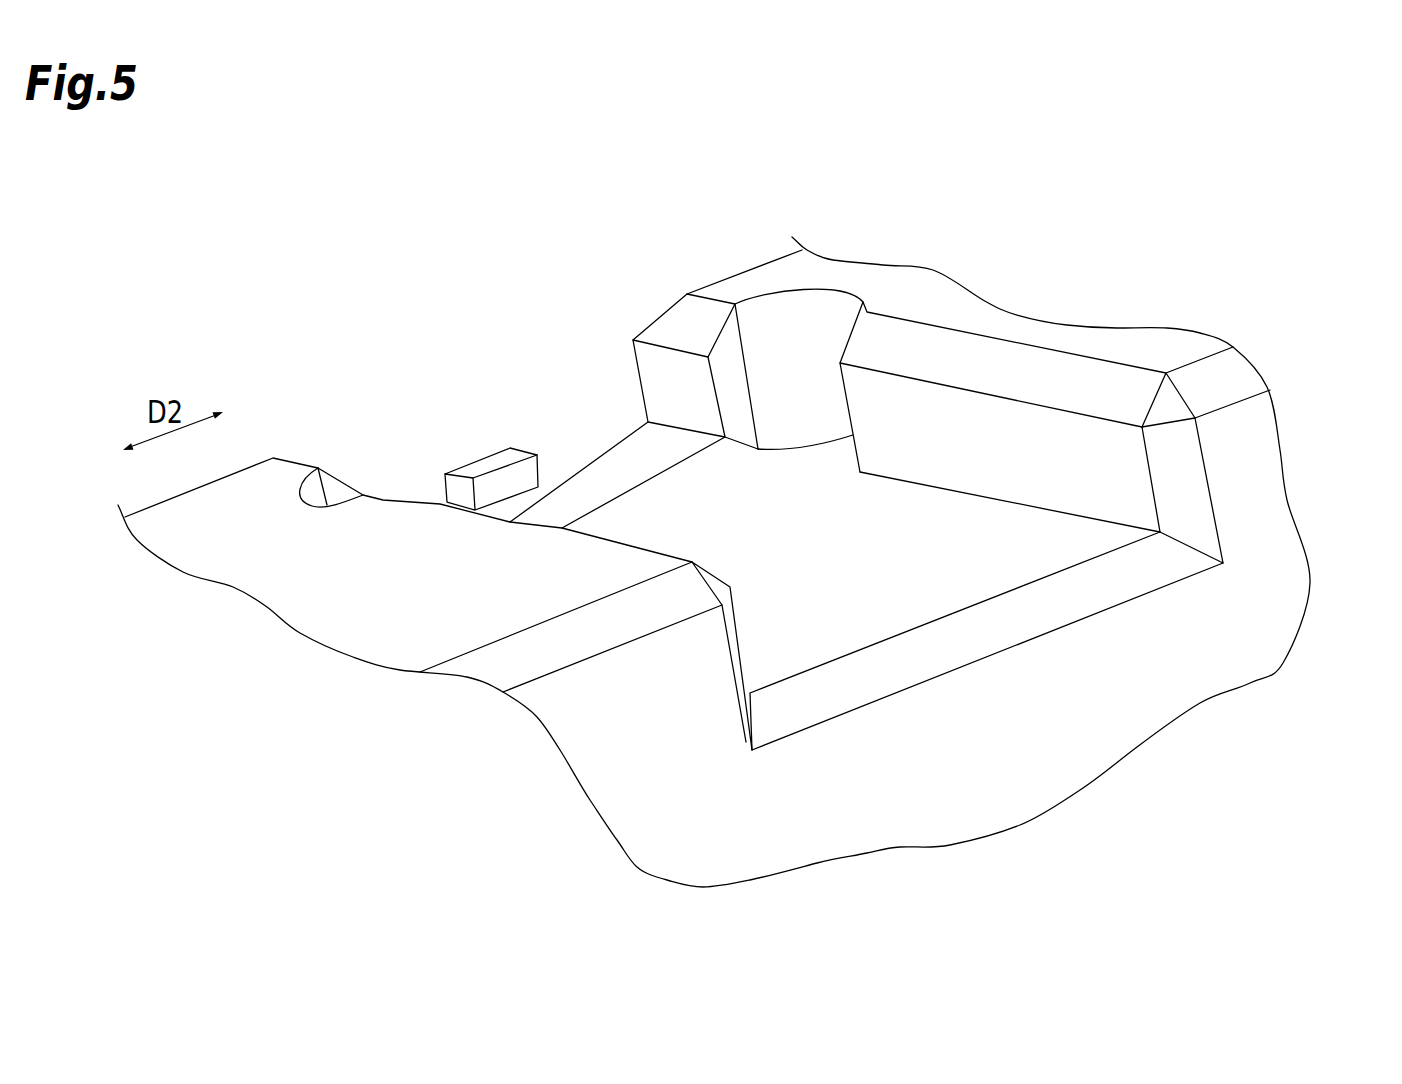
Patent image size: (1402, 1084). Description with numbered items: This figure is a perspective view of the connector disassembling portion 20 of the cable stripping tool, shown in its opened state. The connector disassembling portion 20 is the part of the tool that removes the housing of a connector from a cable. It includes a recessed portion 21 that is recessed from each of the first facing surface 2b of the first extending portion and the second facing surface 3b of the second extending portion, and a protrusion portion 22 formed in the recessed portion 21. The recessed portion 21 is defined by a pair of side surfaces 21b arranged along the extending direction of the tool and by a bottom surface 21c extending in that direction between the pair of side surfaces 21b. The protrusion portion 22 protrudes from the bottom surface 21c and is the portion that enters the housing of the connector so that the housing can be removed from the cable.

The connector disassembling portion 20 is at (749, 546).
The recessed portion 21 is at (910, 586).
The side surface 21b is at (1123, 473).
The bottom surface 21c is at (1023, 557).
The protrusion portion 22 is at (500, 480).
The second facing surface 3b is at (423, 588).
The first facing surface 2b is at (388, 641).